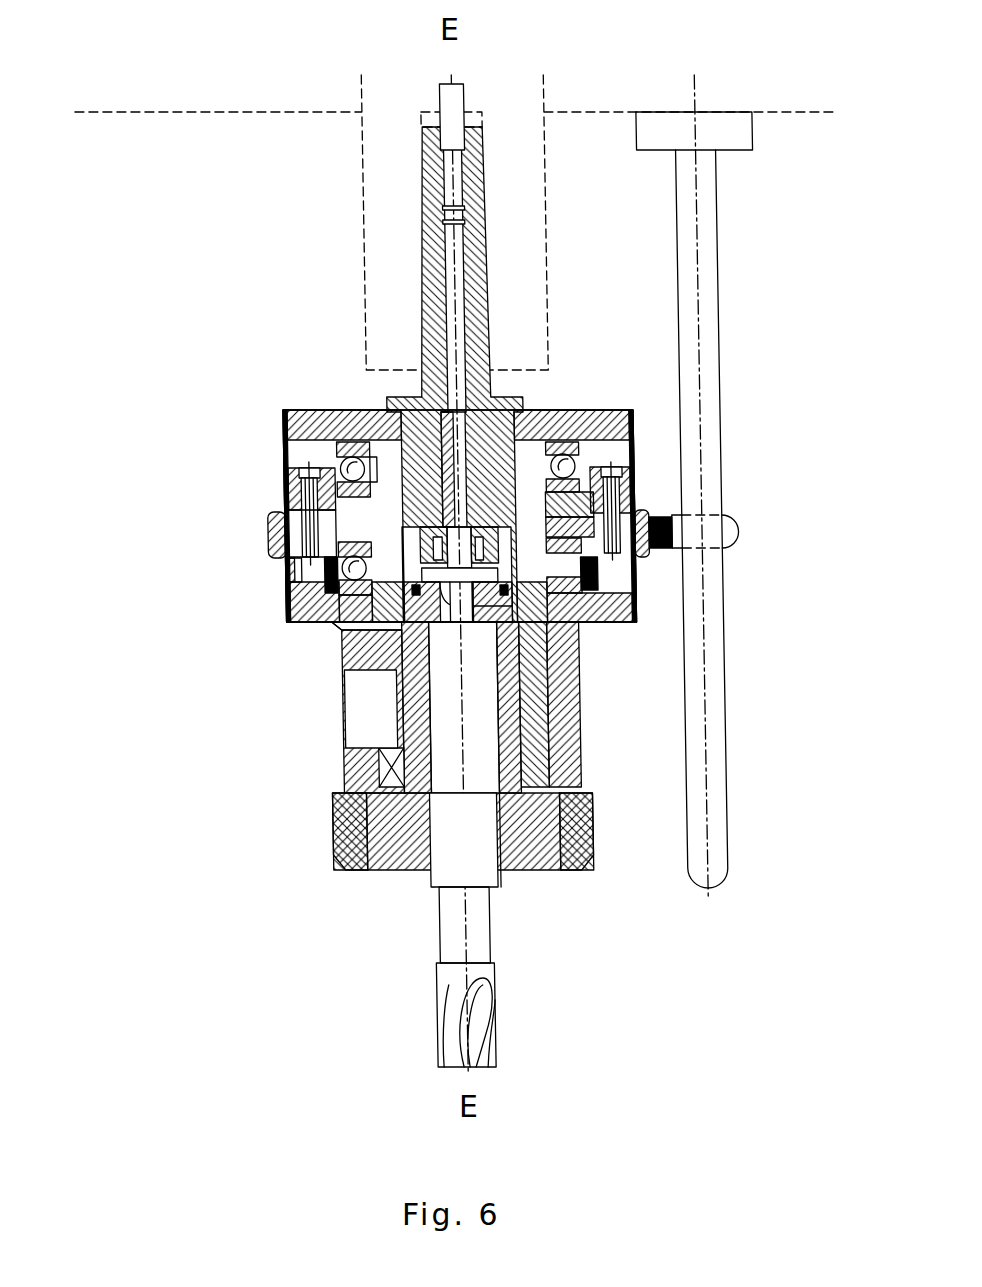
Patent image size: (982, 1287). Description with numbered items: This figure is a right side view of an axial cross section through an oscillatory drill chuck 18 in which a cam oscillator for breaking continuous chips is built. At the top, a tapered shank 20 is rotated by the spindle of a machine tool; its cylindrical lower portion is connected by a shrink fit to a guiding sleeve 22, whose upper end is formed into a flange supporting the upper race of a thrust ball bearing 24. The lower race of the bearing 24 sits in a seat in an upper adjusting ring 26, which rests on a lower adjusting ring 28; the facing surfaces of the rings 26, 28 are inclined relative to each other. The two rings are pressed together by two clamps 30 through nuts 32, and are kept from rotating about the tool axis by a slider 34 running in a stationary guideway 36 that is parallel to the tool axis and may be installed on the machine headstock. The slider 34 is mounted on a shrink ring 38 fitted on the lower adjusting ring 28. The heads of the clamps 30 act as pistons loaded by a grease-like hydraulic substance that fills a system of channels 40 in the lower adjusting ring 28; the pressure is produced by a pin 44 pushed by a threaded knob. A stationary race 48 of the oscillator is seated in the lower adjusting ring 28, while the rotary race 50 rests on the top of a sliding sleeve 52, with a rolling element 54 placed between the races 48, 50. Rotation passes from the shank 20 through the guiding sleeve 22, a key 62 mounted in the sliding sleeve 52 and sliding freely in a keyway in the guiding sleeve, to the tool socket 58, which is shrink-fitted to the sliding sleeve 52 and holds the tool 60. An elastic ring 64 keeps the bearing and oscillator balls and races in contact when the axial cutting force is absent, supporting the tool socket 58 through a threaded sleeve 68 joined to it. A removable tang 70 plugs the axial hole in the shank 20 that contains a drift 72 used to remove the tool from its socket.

The drill chuck 18 is at (277, 887).
The shank 20 is at (430, 273).
The guiding sleeve 22 is at (332, 412).
The thrust ball bearing 24 is at (577, 452).
The upper adjusting ring 26 is at (281, 476).
The lower adjusting ring 28 is at (282, 579).
The clamps 30 is at (270, 513).
The nuts 32 is at (283, 473).
The slider 34 is at (727, 533).
The guideway 36 is at (710, 576).
The shrink ring 38 is at (268, 524).
The system of channels 40 is at (267, 541).
The pin 44 is at (650, 514).
The stationary race 48 is at (282, 610).
The rotary race 50 is at (344, 724).
The sliding sleeve 52 is at (578, 837).
The rolling element 54 is at (331, 632).
The tool socket 58 is at (522, 855).
The tool 60 is at (455, 917).
The key 62 is at (363, 708).
The elastic ring 64 is at (577, 645).
The threaded sleeve 68 is at (540, 663).
The removable tang 70 is at (458, 132).
The drift 72 is at (459, 307).